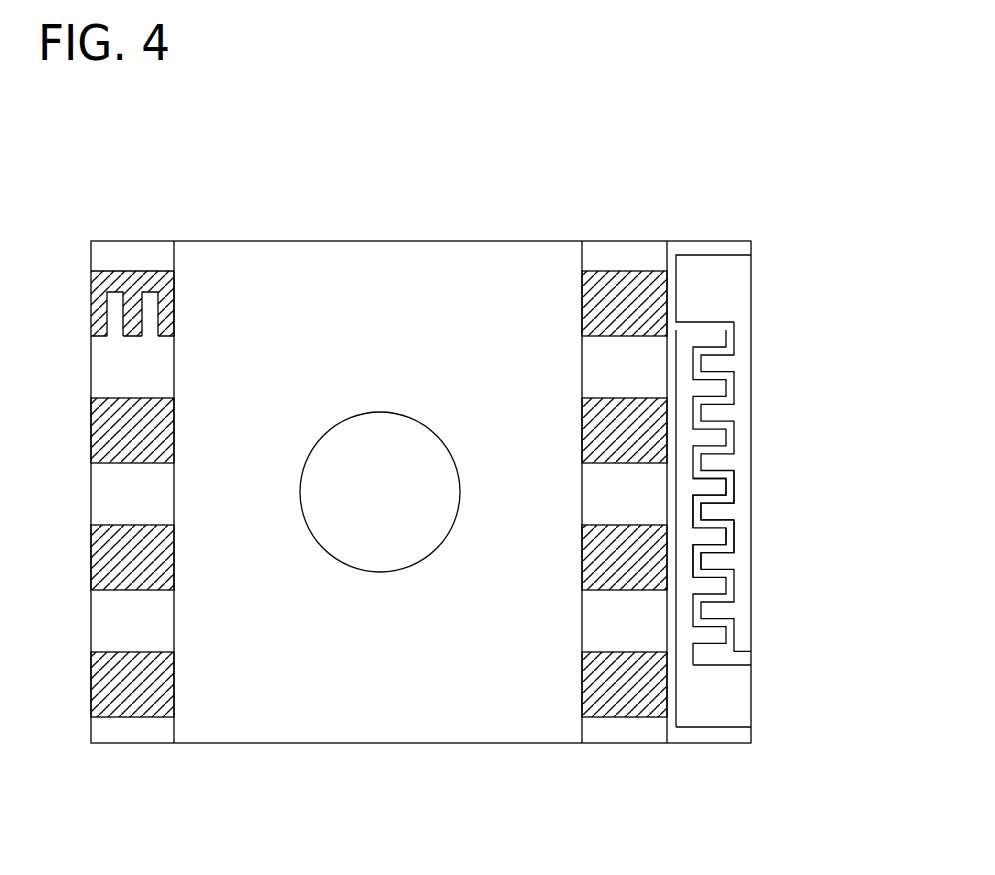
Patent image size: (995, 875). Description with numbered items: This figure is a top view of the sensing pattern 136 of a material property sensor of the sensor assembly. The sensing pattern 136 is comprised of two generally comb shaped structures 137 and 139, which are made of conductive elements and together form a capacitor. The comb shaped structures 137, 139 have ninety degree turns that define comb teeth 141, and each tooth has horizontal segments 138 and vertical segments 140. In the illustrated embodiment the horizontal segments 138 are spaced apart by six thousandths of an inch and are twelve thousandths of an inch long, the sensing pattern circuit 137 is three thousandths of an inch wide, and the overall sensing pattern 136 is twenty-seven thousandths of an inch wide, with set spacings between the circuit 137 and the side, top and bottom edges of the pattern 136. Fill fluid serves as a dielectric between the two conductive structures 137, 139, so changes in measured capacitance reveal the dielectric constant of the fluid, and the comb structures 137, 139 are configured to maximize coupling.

The sensing pattern 136 is at (665, 257).
The comb shaped structure 137 is at (733, 282).
The horizontal segment 138 is at (722, 552).
The comb shaped structure 139 is at (702, 703).
The vertical segment 140 is at (735, 389).
The comb teeth 141 is at (690, 511).